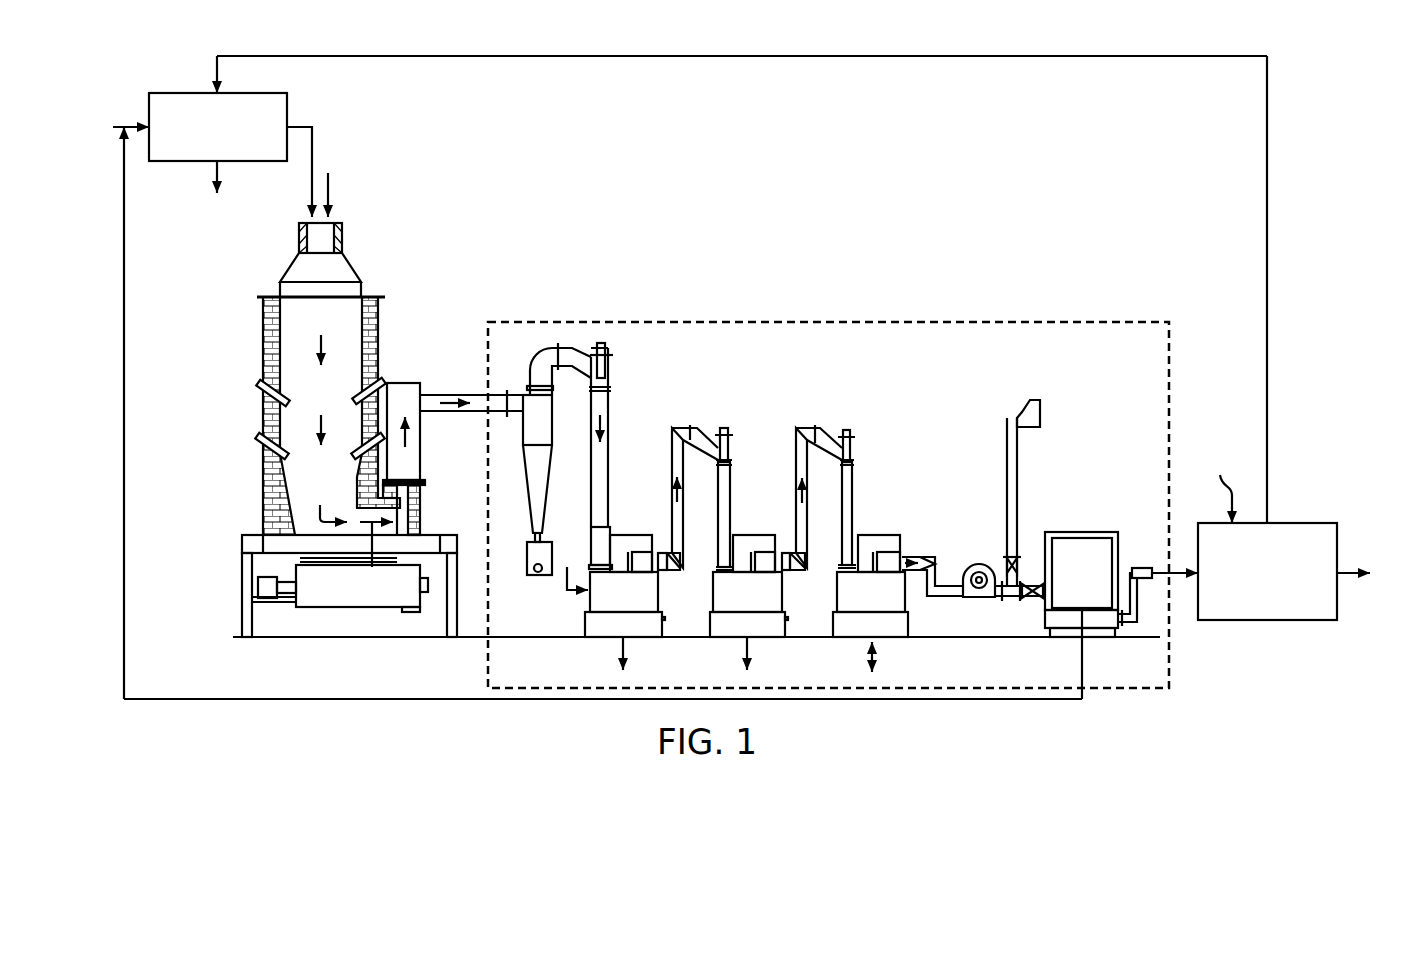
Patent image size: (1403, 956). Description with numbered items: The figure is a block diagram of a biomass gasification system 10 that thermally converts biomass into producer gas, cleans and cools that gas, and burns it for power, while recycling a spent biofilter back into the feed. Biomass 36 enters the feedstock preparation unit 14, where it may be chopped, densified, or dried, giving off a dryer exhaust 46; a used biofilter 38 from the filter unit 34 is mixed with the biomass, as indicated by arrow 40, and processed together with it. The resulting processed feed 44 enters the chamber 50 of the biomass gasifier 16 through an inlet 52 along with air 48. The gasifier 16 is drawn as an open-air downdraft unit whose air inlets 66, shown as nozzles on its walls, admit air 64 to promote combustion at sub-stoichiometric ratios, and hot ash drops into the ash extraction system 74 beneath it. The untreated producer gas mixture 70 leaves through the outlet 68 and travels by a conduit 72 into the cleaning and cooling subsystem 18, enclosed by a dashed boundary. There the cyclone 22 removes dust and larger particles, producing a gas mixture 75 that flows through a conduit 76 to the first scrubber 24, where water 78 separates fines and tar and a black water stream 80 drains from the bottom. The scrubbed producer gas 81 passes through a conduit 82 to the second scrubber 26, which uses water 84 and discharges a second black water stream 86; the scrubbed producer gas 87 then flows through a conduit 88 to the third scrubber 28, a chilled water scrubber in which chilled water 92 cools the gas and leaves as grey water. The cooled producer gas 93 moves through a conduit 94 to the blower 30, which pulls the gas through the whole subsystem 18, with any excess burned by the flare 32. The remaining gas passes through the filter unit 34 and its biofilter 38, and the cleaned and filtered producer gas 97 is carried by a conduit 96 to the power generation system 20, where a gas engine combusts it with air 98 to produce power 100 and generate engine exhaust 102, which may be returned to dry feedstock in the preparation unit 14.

The biomass gasification system 10 is at (1133, 33).
The feedstock preparation unit 14 is at (178, 93).
The biomass gasifier 16 is at (380, 285).
The cleaning and cooling subsystem 18 is at (828, 322).
The power generation system 20 is at (1265, 620).
The cyclone 22 is at (555, 420).
The first scrubber 24 is at (658, 592).
The second scrubber 26 is at (782, 592).
The third scrubber 28 is at (907, 592).
The blower 30 is at (968, 563).
The flare 32 is at (1042, 412).
The filter unit 34 is at (1083, 532).
The biomass 36 is at (123, 127).
The biofilter 38 is at (1050, 568).
The recycle of used biofilter to feedstock preparation unit 40 is at (603, 700).
The processed feed 44 is at (302, 127).
The dryer exhaust 46 is at (213, 173).
The air 48 is at (330, 187).
The chamber 50 is at (300, 313).
The inlet 52 is at (343, 235).
The air 64 is at (258, 385).
The air inlets 66 is at (260, 377).
The outlet 68 is at (422, 528).
The untreated producer gas mixture 70 is at (450, 405).
The conduit 72 is at (458, 395).
The ash extraction system 74 is at (323, 610).
The gas mixture 75 is at (610, 422).
The conduit 76 is at (583, 352).
The water 78 is at (566, 588).
The black water 80 is at (623, 653).
The scrubbed producer gas 81 is at (685, 492).
The conduit 82 is at (673, 490).
The water 84 is at (710, 590).
The black water 86 is at (747, 653).
The scrubbed producer gas 87 is at (808, 493).
The conduit 88 is at (796, 490).
The chilled water 92 is at (872, 656).
The cooled producer gas 93 is at (913, 560).
The conduit 94 is at (923, 557).
The conduit 96 is at (1145, 567).
The cleaned and filtered producer gas 97 is at (1177, 570).
The air 98 is at (1223, 486).
The power 100 is at (1347, 577).
The engine exhaust 102 is at (1268, 288).